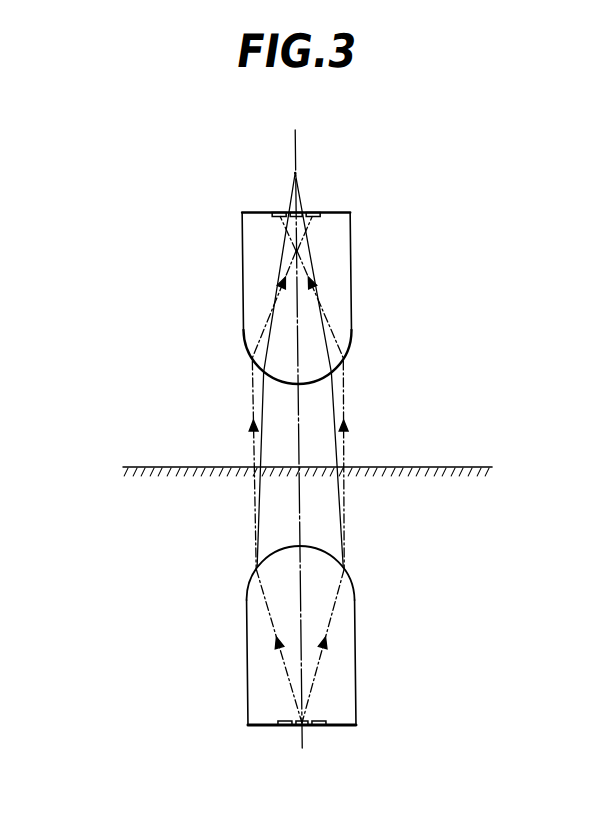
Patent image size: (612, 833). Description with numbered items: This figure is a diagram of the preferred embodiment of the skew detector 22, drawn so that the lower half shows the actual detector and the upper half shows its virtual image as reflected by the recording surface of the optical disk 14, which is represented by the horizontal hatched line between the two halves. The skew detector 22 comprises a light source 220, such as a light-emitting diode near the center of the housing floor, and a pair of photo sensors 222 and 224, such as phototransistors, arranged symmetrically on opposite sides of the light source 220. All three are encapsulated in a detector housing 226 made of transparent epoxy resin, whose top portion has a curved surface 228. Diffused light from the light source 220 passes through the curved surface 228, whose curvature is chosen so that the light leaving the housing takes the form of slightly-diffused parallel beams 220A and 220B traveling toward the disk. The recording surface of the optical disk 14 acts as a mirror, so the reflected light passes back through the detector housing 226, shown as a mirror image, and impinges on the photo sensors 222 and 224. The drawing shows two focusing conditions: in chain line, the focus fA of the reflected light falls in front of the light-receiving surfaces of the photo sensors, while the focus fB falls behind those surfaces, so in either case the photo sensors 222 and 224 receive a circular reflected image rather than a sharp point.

The skew detector 22 is at (318, 469).
The optical disk 14 is at (373, 467).
The light source 220 is at (297, 211).
The photo sensor 222 is at (279, 212).
The photo sensor 224 is at (316, 212).
The detector housing 226 is at (351, 285).
The curved surface 228 is at (352, 602).
The beam 220A is at (251, 483).
The beam 220B is at (343, 487).
The focus of the reflected light fA is at (298, 250).
The focus of the reflected light fB is at (296, 173).